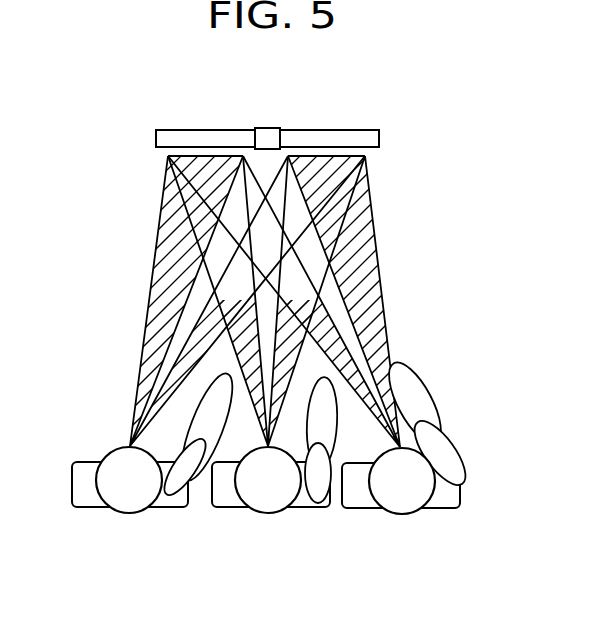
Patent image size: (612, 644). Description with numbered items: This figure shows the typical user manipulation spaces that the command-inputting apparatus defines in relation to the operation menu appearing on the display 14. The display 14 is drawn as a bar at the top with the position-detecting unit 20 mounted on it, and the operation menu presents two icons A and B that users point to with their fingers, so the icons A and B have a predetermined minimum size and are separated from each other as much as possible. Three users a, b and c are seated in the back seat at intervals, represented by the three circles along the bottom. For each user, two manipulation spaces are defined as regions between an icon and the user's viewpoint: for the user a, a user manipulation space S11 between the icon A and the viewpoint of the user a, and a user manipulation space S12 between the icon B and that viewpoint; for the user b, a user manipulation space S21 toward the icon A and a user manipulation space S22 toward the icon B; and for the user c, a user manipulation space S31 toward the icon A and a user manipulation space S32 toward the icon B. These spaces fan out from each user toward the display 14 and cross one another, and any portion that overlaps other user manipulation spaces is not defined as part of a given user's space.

The display 14 is at (341, 131).
The position-detecting unit 20 is at (268, 128).
The icon A is at (197, 157).
The icon B is at (327, 157).
The user manipulation space S11 is at (165, 332).
The user manipulation space S12 is at (177, 377).
The user manipulation space S21 is at (245, 380).
The user manipulation space S22 is at (285, 377).
The user manipulation space S31 is at (327, 332).
The user manipulation space S32 is at (368, 287).
The user a is at (129, 480).
The user b is at (268, 480).
The user c is at (402, 481).